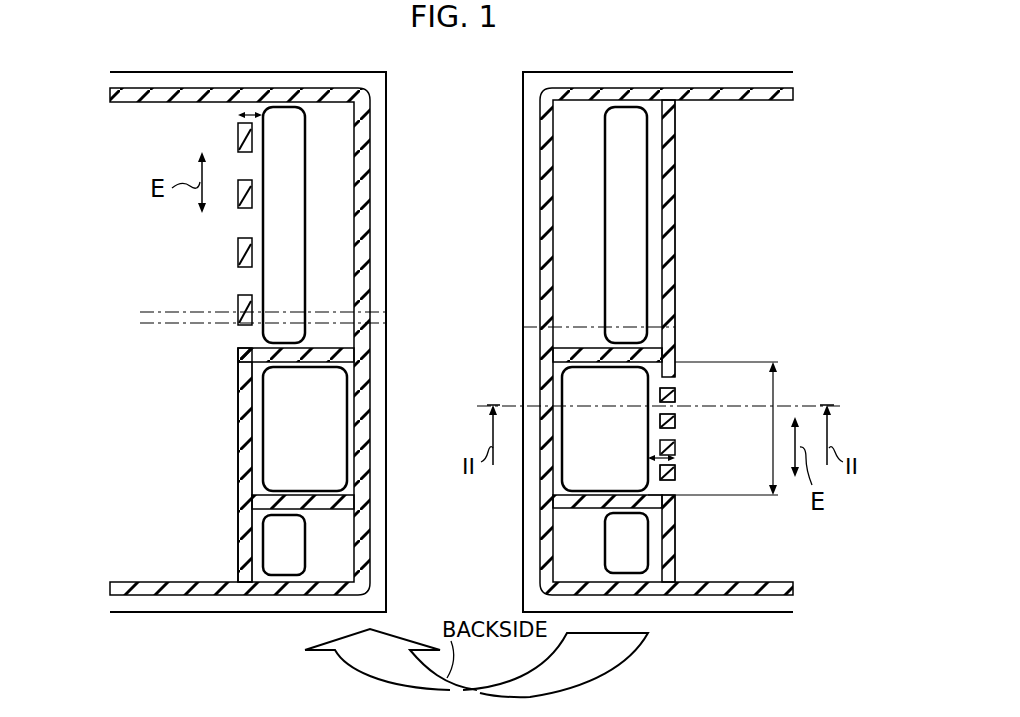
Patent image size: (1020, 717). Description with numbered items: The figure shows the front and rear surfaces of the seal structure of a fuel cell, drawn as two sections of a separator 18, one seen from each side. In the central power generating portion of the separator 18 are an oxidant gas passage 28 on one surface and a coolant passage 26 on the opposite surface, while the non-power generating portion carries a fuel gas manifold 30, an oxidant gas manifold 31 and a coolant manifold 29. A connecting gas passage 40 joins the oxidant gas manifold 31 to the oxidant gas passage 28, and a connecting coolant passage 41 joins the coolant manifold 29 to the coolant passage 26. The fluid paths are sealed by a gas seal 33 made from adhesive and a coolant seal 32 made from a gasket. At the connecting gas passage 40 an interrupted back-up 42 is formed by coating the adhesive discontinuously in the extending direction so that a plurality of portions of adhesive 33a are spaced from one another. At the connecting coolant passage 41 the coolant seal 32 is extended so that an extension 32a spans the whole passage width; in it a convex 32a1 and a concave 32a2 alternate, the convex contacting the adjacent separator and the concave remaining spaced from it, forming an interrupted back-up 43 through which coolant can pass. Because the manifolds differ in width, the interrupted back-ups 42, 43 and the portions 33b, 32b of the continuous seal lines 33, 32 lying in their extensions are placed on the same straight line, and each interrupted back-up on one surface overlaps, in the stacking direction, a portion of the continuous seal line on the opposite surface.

The separator 18 is at (130, 82).
The coolant passage 26 is at (697, 120).
The oxidant gas passage 28 is at (222, 552).
The coolant manifold 29 is at (348, 394).
The fuel gas manifold 30 is at (305, 548).
The oxidant gas manifold 31 is at (305, 263).
The coolant seal 32 is at (677, 190).
The extension of the seal 32a is at (780, 452).
The convex 32a1 is at (676, 396).
The concave 32a2 is at (676, 422).
The portion of the seal line 32b is at (677, 252).
The gas seal 33 is at (238, 418).
The portions of adhesive 33a is at (238, 308).
The portion of the seal line 33b is at (238, 448).
The connecting gas passage 40 is at (250, 112).
The connecting coolant passage 41 is at (676, 472).
The interrupted back-up 42 is at (238, 246).
The interrupted back-up 43 is at (680, 486).